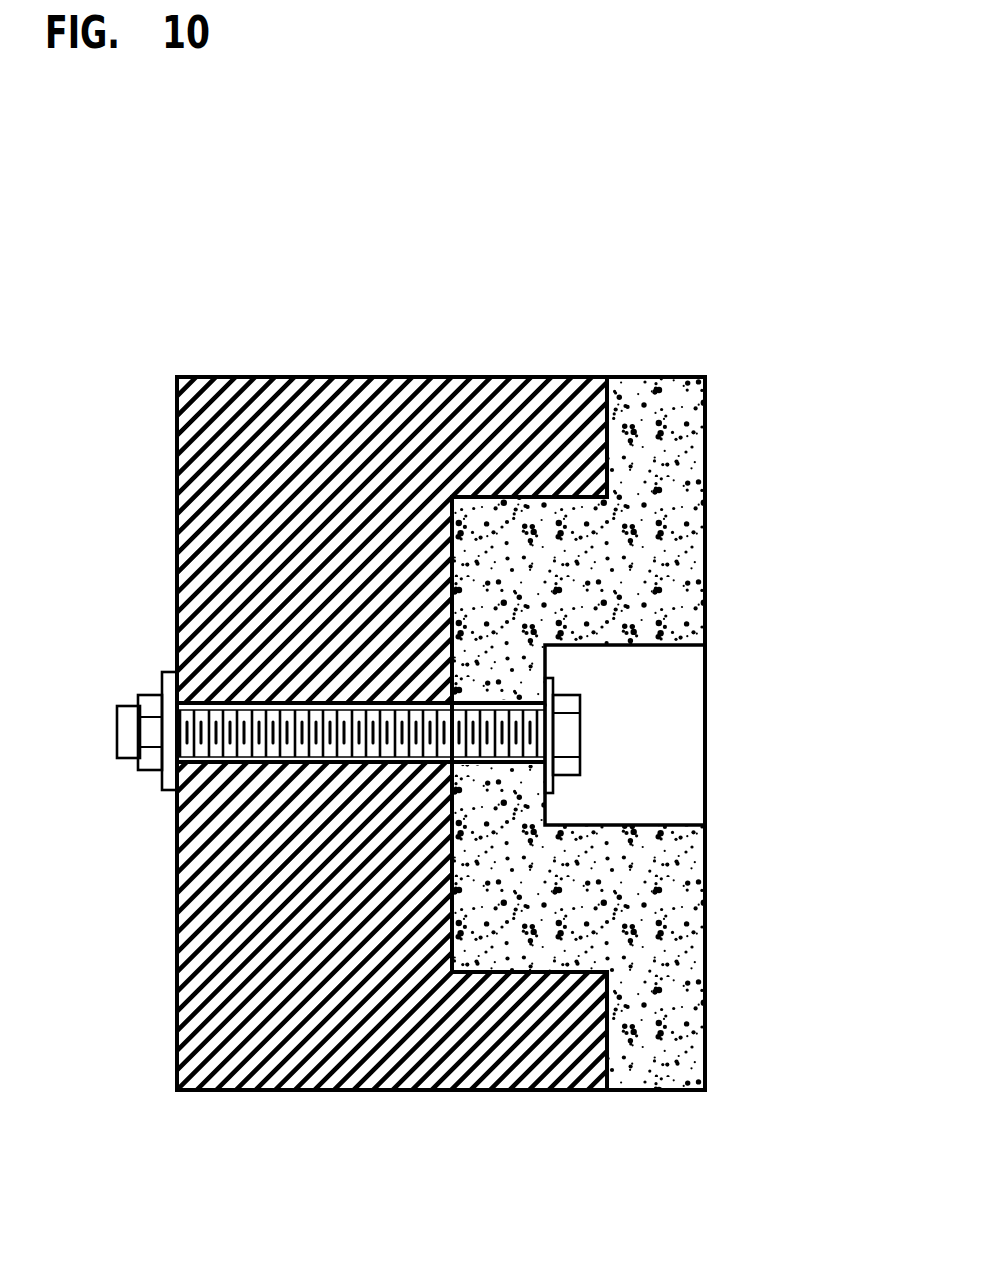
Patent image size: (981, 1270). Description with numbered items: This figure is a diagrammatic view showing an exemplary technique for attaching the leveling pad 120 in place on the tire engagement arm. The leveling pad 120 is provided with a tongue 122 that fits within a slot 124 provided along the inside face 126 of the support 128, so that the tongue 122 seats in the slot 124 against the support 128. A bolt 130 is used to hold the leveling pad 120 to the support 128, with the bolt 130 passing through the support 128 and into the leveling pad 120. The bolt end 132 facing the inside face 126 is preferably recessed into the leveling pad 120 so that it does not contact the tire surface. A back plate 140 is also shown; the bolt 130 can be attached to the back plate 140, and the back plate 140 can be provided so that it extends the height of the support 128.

The leveling pad 120 is at (683, 602).
The tongue 122 is at (487, 517).
The slot 124 is at (553, 497).
The inside face 126 is at (786, 497).
The support 128 is at (310, 420).
The bolt 130 is at (192, 725).
The bolt end 132 is at (562, 743).
The back plate 140 is at (662, 438).